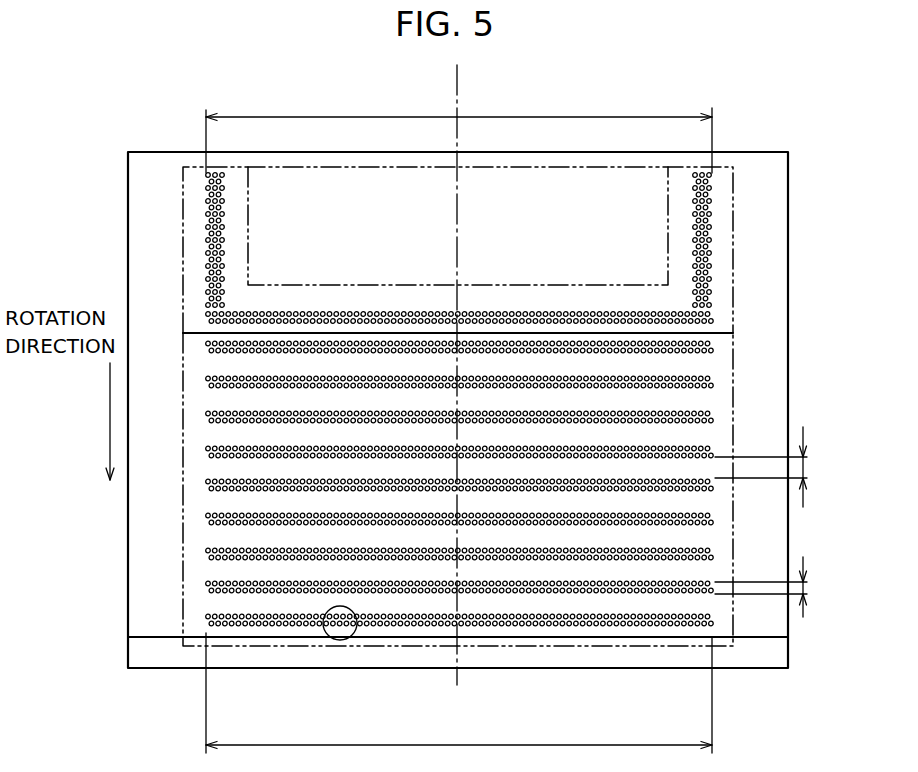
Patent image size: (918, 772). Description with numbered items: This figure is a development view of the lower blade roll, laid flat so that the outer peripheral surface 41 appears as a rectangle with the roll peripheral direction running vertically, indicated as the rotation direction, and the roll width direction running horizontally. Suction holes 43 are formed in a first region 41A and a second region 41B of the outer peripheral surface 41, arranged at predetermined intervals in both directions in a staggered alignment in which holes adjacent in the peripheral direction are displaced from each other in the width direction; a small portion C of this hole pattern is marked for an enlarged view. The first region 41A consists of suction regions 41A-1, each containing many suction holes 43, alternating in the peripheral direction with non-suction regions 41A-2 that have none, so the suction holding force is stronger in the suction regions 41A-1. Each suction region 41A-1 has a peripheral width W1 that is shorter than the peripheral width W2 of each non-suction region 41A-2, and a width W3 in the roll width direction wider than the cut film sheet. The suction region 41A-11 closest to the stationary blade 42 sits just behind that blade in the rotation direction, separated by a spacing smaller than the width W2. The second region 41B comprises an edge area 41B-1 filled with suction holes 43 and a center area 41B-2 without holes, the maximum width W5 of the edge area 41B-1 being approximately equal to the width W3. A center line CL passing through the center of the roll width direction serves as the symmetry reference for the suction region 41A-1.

The outer peripheral surface 41 is at (757, 108).
The first region 41A is at (183, 558).
The second region 41B is at (183, 246).
The suction region 41A-1 is at (718, 525).
The non-suction region 41A-2 is at (705, 363).
The suction region closest to the stationary blade 41A-11 is at (207, 620).
The edge area 41B-1 is at (728, 223).
The center area 41B-2 is at (466, 172).
The stationary blade 42 is at (635, 658).
The suction hole 43 is at (451, 500).
The enlarged portion C is at (322, 637).
The center line CL is at (458, 83).
The width of suction region in roll peripheral direction W1 is at (782, 587).
The width of non-suction region in roll peripheral direction W2 is at (782, 467).
The width of suction region in roll width direction W3 is at (459, 693).
The maximum width of edge area in roll width direction W5 is at (459, 131).